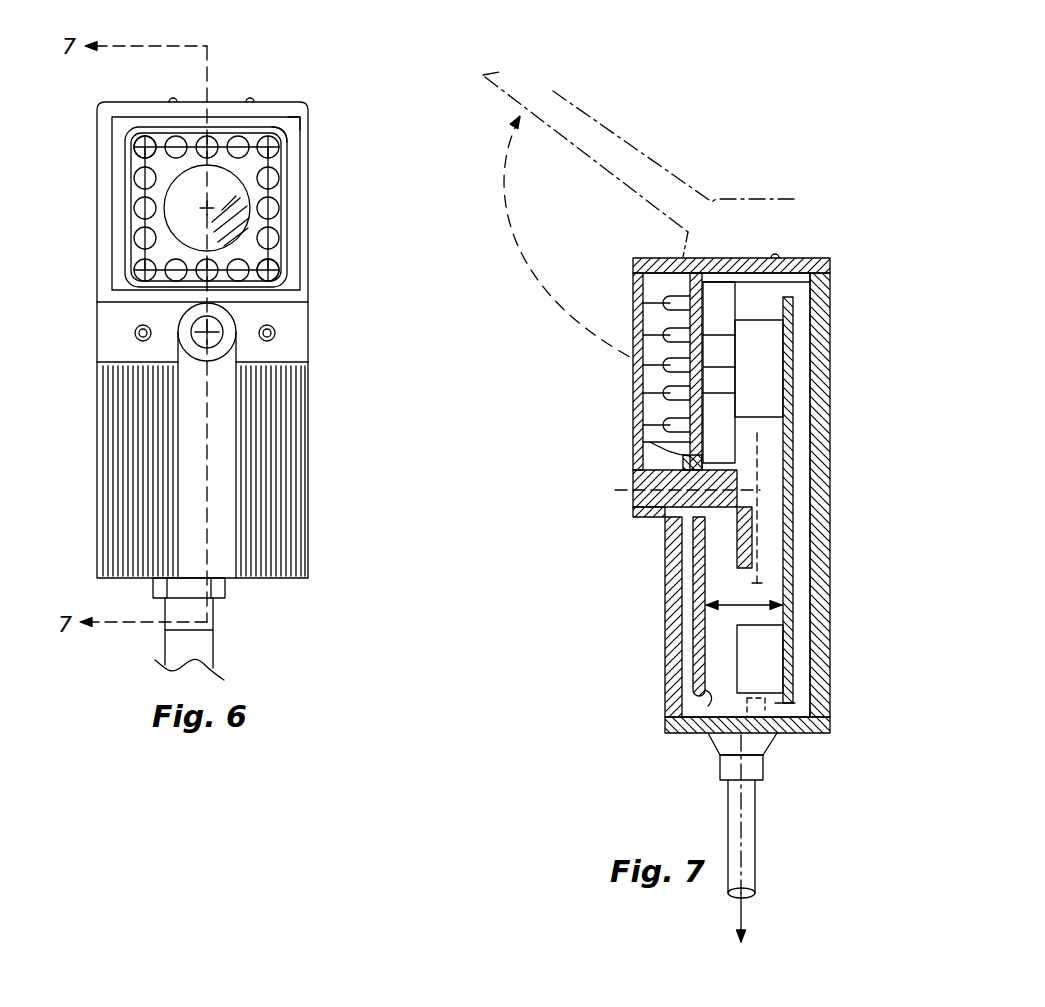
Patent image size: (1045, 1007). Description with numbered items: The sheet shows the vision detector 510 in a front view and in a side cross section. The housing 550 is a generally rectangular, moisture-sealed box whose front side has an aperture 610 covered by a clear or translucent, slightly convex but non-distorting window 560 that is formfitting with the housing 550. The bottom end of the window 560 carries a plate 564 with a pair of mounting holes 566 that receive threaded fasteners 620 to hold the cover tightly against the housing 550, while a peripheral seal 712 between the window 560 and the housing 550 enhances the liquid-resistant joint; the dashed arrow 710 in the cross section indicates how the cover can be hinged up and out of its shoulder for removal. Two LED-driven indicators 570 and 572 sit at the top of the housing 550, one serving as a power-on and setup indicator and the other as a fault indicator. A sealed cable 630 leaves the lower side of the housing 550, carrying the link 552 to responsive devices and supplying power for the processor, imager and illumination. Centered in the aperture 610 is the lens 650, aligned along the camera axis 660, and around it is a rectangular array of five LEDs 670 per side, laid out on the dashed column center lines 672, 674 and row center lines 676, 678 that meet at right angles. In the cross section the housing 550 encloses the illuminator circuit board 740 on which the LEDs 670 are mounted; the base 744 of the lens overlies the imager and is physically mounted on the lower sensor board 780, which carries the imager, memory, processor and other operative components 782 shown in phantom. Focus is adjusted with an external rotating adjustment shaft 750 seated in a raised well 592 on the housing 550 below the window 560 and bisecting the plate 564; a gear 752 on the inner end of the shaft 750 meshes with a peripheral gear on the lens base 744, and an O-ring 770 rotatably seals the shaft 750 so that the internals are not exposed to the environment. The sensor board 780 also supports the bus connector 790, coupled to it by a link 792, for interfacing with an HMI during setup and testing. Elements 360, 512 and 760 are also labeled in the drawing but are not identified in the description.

In FIG. 7, the light emitter compartment 360 is at (630, 433).
In FIG. 6, the vision detector 510 is at (335, 188).
In FIG. 7, the vision detector 510 is at (840, 286).
In FIG. 7, the partition 512 is at (642, 441).
In FIG. 6, the housing 550 is at (318, 118).
In FIG. 7, the housing 550 is at (830, 258).
In FIG. 7, the link 552 is at (782, 735).
In FIG. 6, the window 560 is at (283, 112).
In FIG. 7, the window 560 is at (661, 152).
In FIG. 6, the plate 564 is at (117, 349).
In FIG. 6, the mounting holes 566 is at (133, 330).
In FIG. 6, the indicator 570 is at (173, 100).
In FIG. 7, the indicator 570 is at (775, 257).
In FIG. 6, the indicator 572 is at (250, 100).
In FIG. 6, the raised well 592 is at (193, 360).
In FIG. 7, the raised well 592 is at (657, 522).
In FIG. 6, the aperture 610 is at (288, 262).
In FIG. 6, the threaded fasteners 620 is at (137, 327).
In FIG. 6, the sealed cable 630 is at (213, 645).
In FIG. 7, the sealed cable 630 is at (755, 832).
In FIG. 6, the lens 650 is at (262, 230).
In FIG. 7, the lens 650 is at (738, 420).
In FIG. 6, the camera axis 660 is at (212, 205).
In FIG. 7, the camera axis 660 is at (753, 365).
In FIG. 6, the LEDs 670 is at (134, 268).
In FIG. 7, the LEDs 670 is at (665, 335).
In FIG. 6, the column center line 672 is at (160, 128).
In FIG. 6, the column center line 674 is at (310, 110).
In FIG. 6, the row center line 676 is at (288, 127).
In FIG. 6, the row center line 678 is at (280, 272).
In FIG. 7, the dashed arrow 710 is at (513, 233).
In FIG. 7, the peripheral seal 712 is at (700, 260).
In FIG. 7, the illuminator circuit board 740 is at (712, 712).
In FIG. 7, the lens base 744 is at (773, 343).
In FIG. 6, the adjustment shaft 750 is at (213, 342).
In FIG. 7, the adjustment shaft 750 is at (633, 495).
In FIG. 7, the gear 752 is at (768, 440).
In FIG. 7, the main circuit board 760 is at (785, 545).
In FIG. 7, the O-ring 770 is at (667, 577).
In FIG. 7, the sensor board 780 is at (787, 572).
In FIG. 7, the operative components 782 is at (763, 592).
In FIG. 7, the bus connector 790 is at (772, 702).
In FIG. 7, the link 792 is at (780, 617).